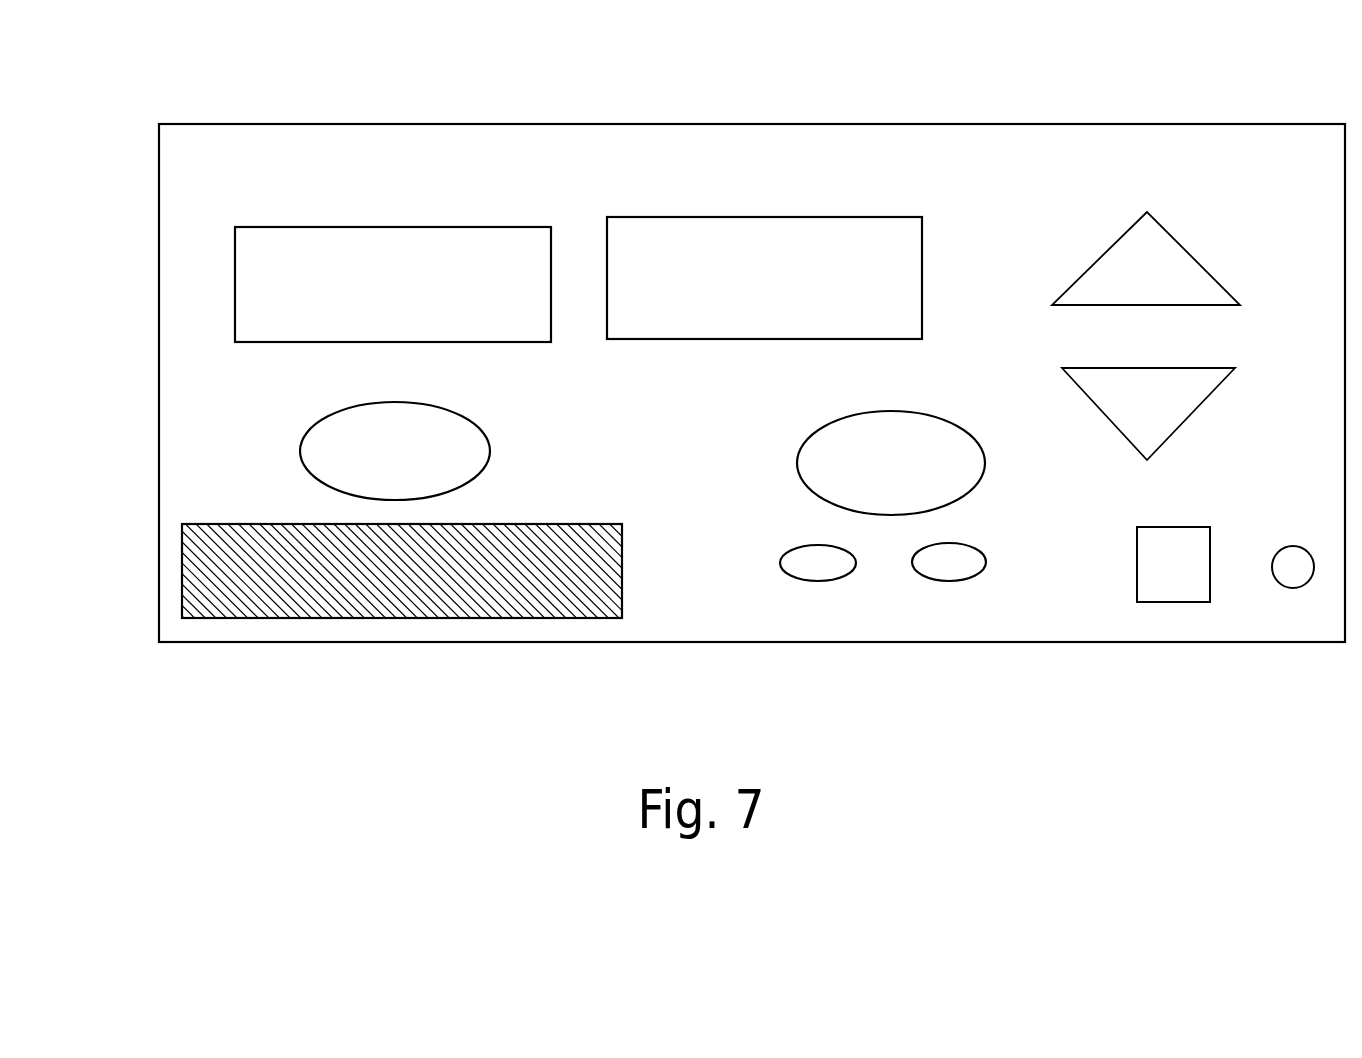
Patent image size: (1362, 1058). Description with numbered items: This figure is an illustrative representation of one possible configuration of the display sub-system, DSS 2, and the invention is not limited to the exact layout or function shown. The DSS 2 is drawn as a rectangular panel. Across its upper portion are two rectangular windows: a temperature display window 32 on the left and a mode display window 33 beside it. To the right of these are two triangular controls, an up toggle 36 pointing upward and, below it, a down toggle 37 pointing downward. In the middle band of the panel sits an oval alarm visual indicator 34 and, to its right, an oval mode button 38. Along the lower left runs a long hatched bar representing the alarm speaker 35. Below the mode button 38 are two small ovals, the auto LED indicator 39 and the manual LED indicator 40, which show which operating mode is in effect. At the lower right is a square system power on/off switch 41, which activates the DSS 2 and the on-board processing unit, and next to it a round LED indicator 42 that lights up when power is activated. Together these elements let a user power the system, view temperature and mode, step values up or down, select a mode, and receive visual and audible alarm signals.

The display sub-system 2 is at (320, 124).
The temperature display window 32 is at (432, 227).
The mode display window 33 is at (810, 213).
The alarm visual indicator 34 is at (473, 420).
The alarm speaker 35 is at (543, 522).
The up toggle 36 is at (1193, 258).
The down toggle 37 is at (1172, 437).
The mode button 38 is at (902, 412).
The auto LED indicator 39 is at (780, 560).
The manual LED indicator 40 is at (985, 550).
The system power on/off switch 41 is at (1178, 605).
The LED indicator 42 is at (1293, 588).